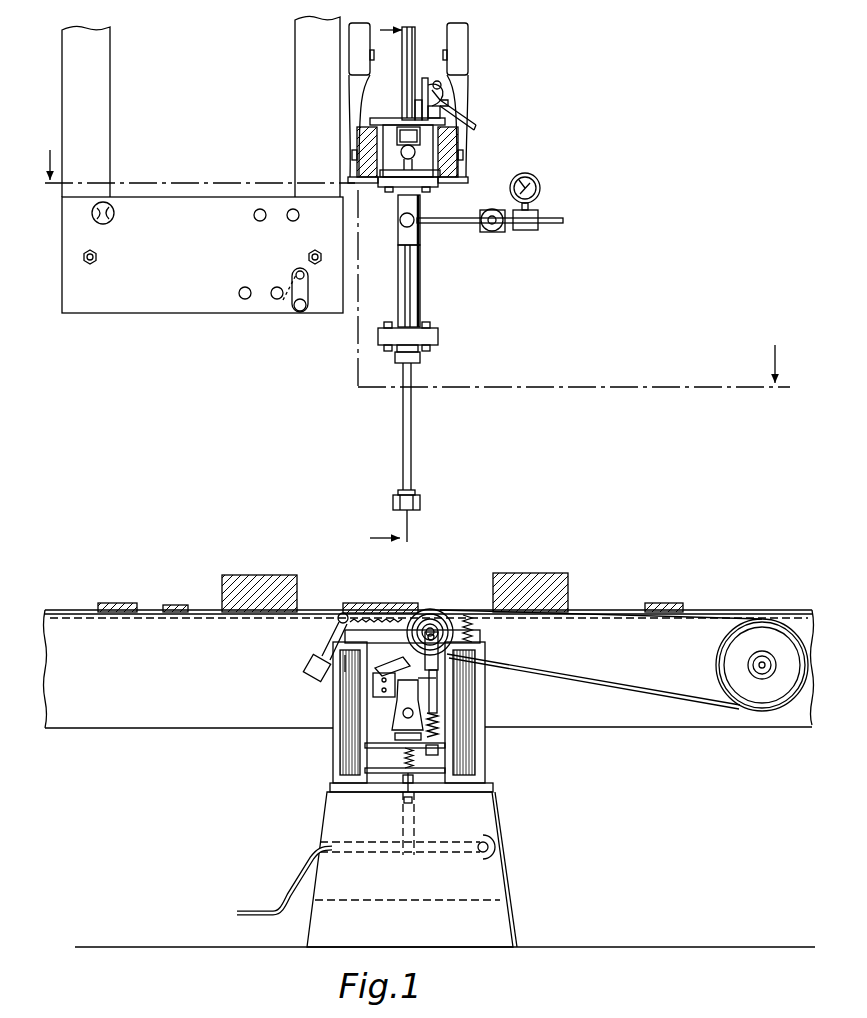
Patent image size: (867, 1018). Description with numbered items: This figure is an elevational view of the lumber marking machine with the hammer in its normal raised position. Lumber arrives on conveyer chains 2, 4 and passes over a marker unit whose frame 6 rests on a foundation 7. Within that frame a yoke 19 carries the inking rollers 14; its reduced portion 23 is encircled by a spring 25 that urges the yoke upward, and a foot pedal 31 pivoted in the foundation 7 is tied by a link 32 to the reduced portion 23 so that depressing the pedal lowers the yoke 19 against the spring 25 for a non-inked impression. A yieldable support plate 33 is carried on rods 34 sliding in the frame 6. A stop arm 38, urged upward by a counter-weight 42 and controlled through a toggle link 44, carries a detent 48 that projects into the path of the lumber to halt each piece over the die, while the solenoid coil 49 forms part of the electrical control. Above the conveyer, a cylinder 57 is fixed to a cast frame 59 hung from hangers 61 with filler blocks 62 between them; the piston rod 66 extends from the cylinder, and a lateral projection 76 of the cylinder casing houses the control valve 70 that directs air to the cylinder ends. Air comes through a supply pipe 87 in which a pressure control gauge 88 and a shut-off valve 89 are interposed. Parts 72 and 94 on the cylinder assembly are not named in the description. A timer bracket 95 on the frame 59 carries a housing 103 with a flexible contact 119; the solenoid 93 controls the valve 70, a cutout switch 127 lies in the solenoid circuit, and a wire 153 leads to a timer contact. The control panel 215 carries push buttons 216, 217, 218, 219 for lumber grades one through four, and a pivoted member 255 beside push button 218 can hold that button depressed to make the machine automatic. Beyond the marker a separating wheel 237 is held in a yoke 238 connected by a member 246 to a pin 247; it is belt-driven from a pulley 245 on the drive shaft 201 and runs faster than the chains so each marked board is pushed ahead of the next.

The conveyer chain 2 is at (413, 275).
The conveyer chain 4 is at (39, 611).
The frame 6 is at (485, 766).
The foundation 7 is at (505, 921).
The inking rollers 14 is at (391, 666).
The yoke 19 is at (325, 770).
The reduced portion 23 is at (404, 789).
The spring 25 is at (404, 765).
The foot pedal 31 is at (296, 880).
The link 32 is at (418, 829).
The plate 33 is at (490, 612).
The rods 34 is at (478, 688).
The arm 38 is at (363, 603).
The counter-weight 42 is at (305, 668).
The toggle link 44 is at (437, 678).
The detent 48 is at (437, 609).
The solenoid coil 49 is at (380, 700).
The cylinder 57 is at (398, 297).
The frame 59 is at (383, 130).
The hangers 61 is at (352, 108).
The filler blocks 62 is at (455, 150).
The piston rod 66 is at (412, 45).
The control valve 70 is at (420, 240).
The nut 72 is at (420, 357).
The lateral projection 76 is at (424, 504).
The air supply pipe 87 is at (452, 218).
The pressure control gauge 88 is at (537, 183).
The shut-off valve 89 is at (492, 231).
The solenoid 93 is at (400, 128).
The flange 94 is at (400, 188).
The bracket 95 is at (425, 85).
The housing 103 is at (438, 95).
The flexible contact 119 is at (473, 118).
The cutout switch 127 is at (110, 207).
The wire 153 is at (450, 112).
The drive shaft 201 is at (762, 670).
The panel 215 is at (150, 302).
The push button 216 is at (245, 287).
The push button 217 is at (260, 208).
The push button 218 is at (277, 287).
The push button 219 is at (293, 208).
The separating wheel 237 is at (450, 612).
The yoke 238 is at (440, 640).
The pulley 245 is at (720, 660).
The member 246 is at (345, 663).
The pin 247 is at (338, 628).
The member 255 is at (305, 311).